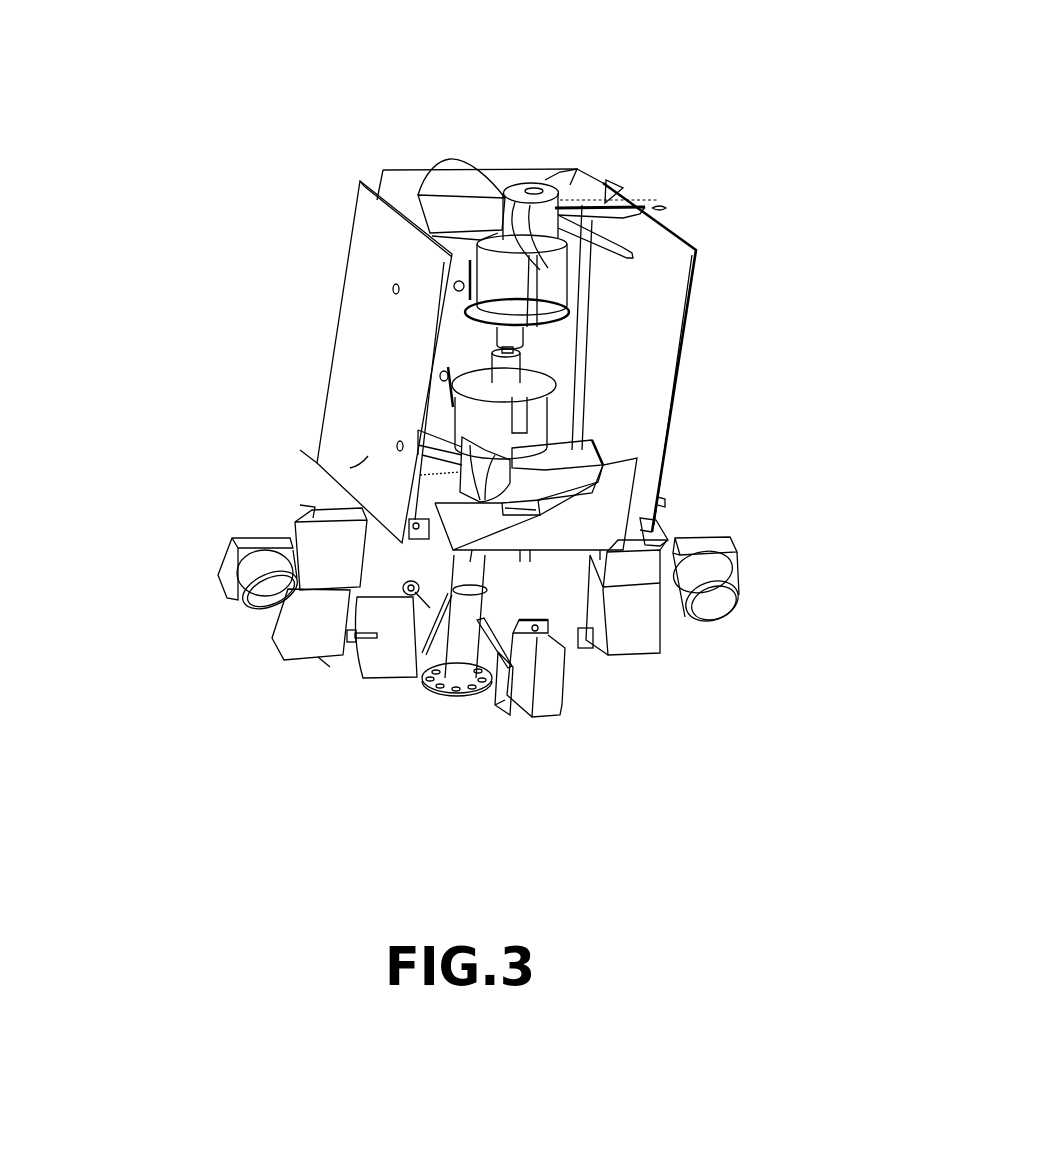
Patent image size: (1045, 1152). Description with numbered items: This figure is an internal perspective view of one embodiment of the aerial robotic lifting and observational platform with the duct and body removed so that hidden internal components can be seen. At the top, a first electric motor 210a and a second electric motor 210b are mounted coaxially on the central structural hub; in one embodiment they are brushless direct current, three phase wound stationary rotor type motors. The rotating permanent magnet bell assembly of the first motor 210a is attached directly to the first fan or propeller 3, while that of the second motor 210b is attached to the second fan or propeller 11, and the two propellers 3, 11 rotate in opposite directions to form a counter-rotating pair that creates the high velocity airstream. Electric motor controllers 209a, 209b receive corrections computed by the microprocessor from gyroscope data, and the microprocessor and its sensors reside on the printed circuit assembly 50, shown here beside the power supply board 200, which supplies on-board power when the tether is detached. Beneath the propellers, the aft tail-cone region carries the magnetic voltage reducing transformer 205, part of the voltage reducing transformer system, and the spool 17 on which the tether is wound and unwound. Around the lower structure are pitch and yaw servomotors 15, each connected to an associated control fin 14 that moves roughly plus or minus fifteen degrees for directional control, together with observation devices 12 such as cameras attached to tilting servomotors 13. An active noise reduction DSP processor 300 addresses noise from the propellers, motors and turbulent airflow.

The first fan or propeller 3 is at (605, 203).
The second fan or propeller 11 is at (560, 465).
The observation devices 12 is at (710, 567).
The tilting servomotors 13 is at (652, 532).
The control fin 14 is at (393, 638).
The pitch and yaw servomotors 15 is at (312, 623).
The spool 17 is at (463, 617).
The printed circuit assembly 50 is at (362, 367).
The power supply board 200 is at (666, 300).
The magnetic voltage reducing transformer 205 is at (452, 547).
The electric motor controller 209a is at (472, 310).
The electric motor controller 209b is at (545, 383).
The first electric motor 210a is at (427, 234).
The second electric motor 210b is at (440, 372).
The active noise reduction DSP processor 300 is at (487, 182).